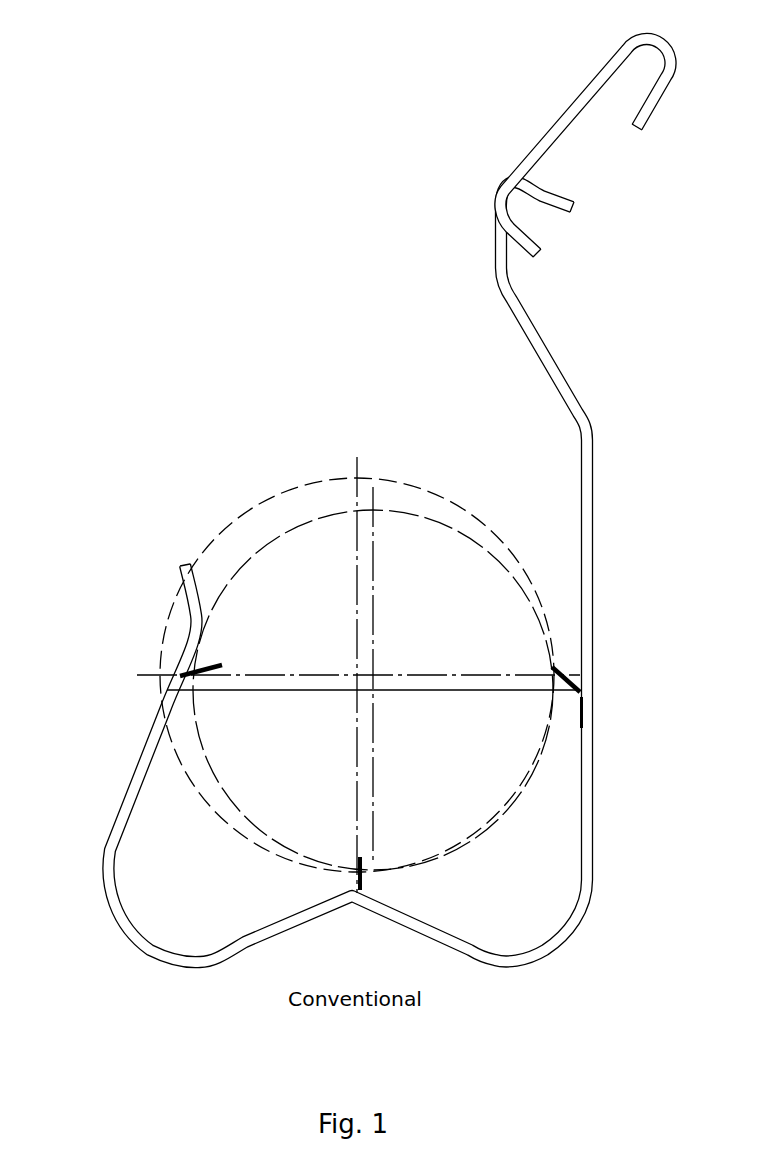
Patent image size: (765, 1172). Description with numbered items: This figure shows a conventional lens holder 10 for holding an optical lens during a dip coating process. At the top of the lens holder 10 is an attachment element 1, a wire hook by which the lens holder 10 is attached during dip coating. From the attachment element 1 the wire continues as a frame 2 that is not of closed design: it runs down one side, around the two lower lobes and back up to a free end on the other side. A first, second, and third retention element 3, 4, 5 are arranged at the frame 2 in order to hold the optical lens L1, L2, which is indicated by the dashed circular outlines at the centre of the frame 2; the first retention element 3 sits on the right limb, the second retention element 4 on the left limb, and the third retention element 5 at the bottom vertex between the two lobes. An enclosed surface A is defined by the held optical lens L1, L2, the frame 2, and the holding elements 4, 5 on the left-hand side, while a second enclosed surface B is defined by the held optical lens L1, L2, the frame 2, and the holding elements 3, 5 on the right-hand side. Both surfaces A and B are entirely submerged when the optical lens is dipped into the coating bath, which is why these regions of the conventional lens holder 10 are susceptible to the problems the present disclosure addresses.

The attachment element 1 is at (552, 115).
The frame 2 is at (597, 505).
The first retention element 3 is at (563, 667).
The second retention element 4 is at (195, 661).
The third retention element 5 is at (368, 883).
The lens holder 10 is at (370, 500).
The optical lens L1 is at (235, 562).
The optical lens L2 is at (243, 511).
The enclosed surface A is at (232, 892).
The second enclosed surface B is at (470, 903).